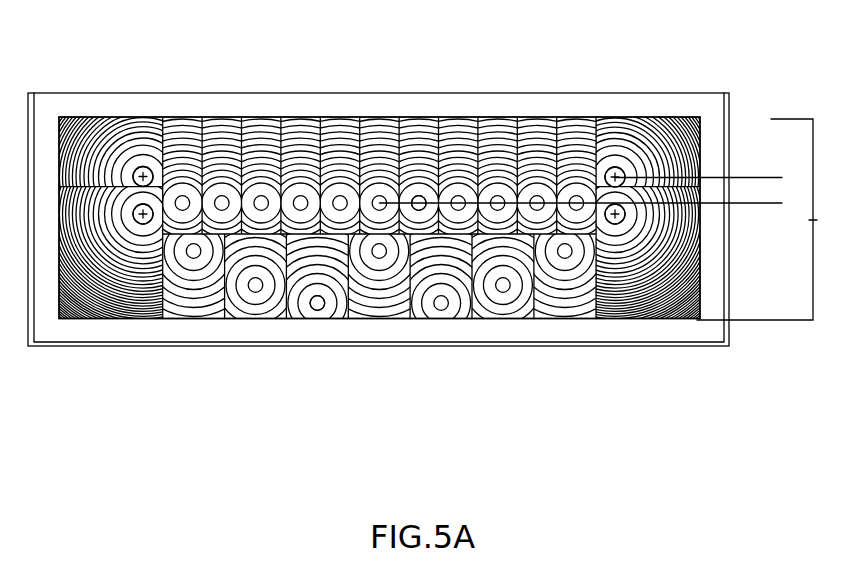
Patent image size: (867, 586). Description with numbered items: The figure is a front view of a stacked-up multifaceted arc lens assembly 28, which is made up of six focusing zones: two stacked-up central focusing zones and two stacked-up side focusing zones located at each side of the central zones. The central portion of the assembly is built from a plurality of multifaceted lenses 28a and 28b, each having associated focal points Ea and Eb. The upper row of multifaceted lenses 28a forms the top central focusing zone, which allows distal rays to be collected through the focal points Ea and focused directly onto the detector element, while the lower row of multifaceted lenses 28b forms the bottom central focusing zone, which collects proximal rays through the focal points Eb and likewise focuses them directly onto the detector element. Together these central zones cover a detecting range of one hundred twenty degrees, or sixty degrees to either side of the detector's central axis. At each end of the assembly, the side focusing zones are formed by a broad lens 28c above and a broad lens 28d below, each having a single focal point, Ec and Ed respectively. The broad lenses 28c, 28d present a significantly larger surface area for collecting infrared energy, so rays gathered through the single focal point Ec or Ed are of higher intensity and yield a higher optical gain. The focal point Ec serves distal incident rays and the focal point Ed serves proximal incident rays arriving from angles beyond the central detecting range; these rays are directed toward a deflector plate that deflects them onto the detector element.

The stacked-up multifaceted arc lens assembly 28 is at (327, 105).
The multifaceted lens 28a is at (423, 119).
The multifaceted lens 28b is at (293, 307).
The broad lens 28c is at (102, 116).
The broad lens 28d is at (75, 319).
The focal point Ea is at (414, 196).
The focal point Eb is at (320, 306).
The focal point Ec is at (146, 168).
The focal point Ed is at (144, 222).